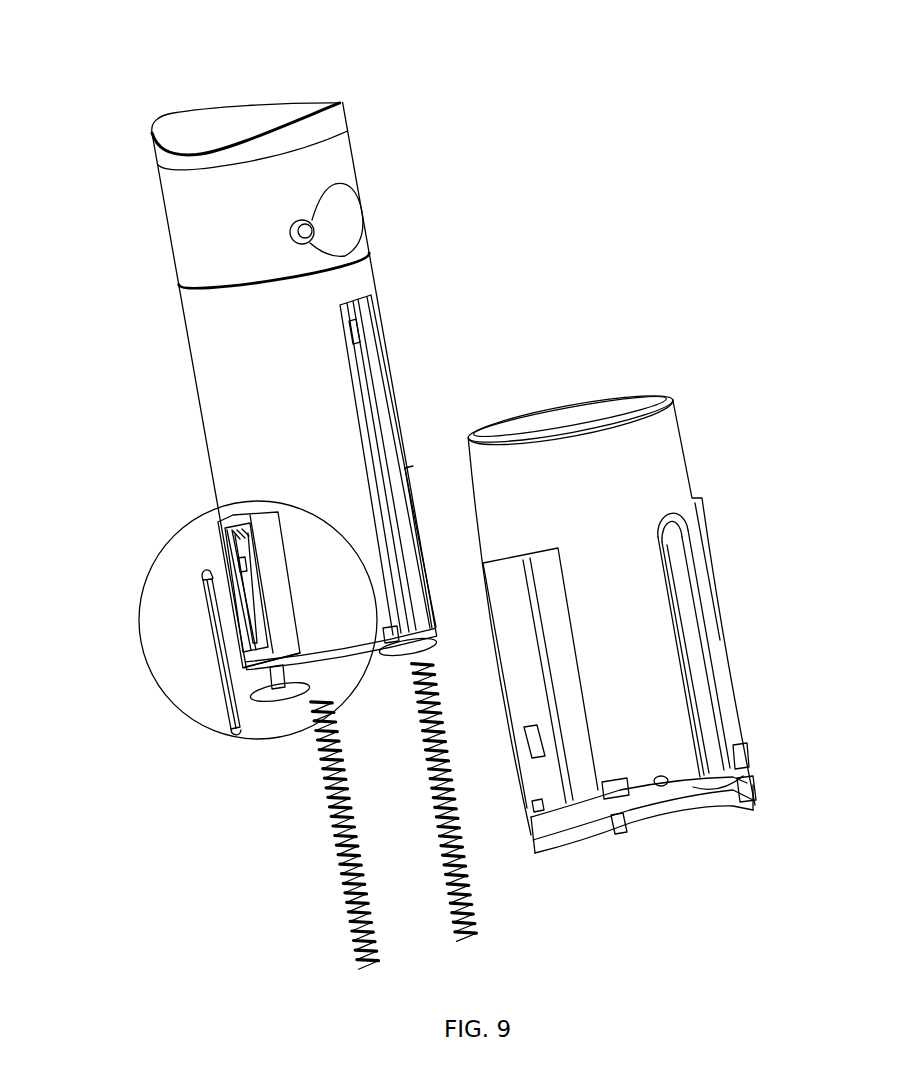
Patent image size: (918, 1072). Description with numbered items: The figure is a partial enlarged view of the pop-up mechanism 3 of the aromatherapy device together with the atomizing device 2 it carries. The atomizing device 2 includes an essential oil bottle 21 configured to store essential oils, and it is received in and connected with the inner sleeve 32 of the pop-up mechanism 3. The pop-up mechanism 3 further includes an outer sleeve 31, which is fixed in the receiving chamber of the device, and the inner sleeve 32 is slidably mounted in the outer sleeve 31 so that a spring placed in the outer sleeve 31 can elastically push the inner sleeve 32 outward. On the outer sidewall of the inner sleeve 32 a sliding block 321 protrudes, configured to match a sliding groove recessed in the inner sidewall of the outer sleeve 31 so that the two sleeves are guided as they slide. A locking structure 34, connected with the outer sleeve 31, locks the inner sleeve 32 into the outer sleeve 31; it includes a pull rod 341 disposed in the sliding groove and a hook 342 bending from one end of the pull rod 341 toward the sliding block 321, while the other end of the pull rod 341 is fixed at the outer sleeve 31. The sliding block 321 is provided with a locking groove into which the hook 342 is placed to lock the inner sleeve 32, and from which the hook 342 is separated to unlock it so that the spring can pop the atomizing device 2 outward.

The atomizing device 2 is at (365, 203).
The essential oil bottle 21 is at (338, 160).
The pop-up mechanism 3 is at (565, 381).
The outer sleeve 31 is at (605, 650).
The inner sleeve 32 is at (335, 425).
The sliding block 321 is at (282, 585).
The locking structure 34 is at (196, 634).
The pull rod 341 is at (213, 667).
The hook 342 is at (213, 578).